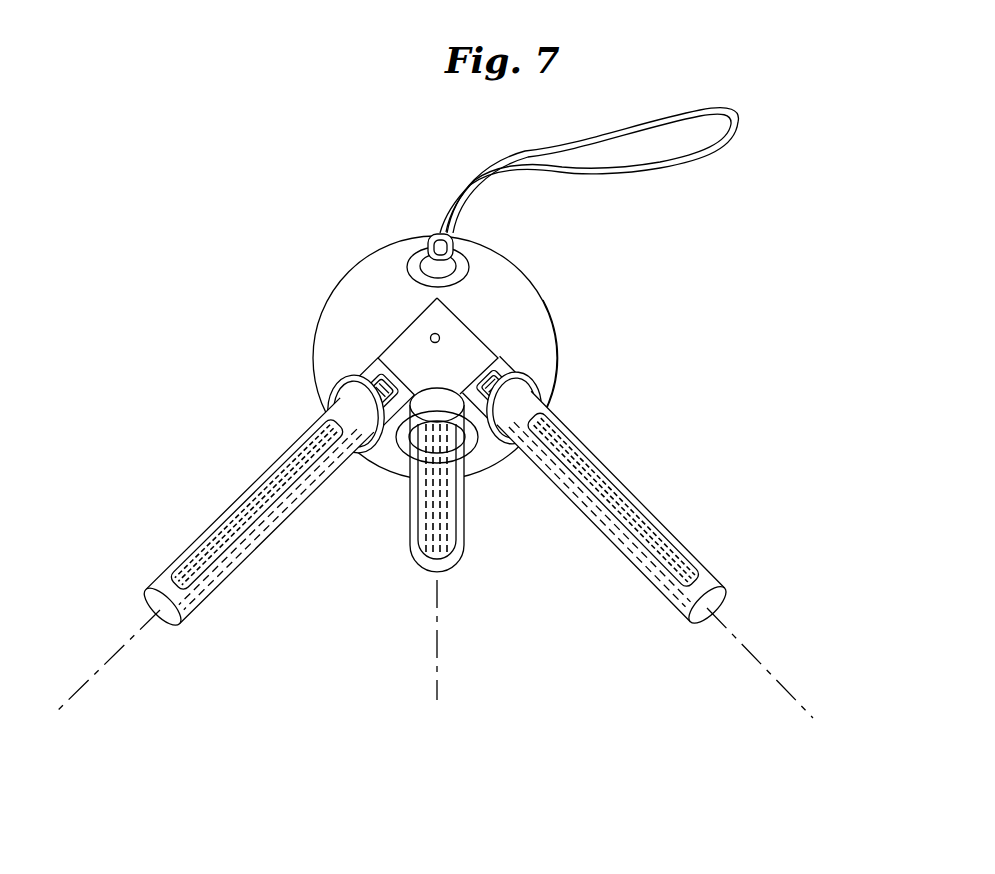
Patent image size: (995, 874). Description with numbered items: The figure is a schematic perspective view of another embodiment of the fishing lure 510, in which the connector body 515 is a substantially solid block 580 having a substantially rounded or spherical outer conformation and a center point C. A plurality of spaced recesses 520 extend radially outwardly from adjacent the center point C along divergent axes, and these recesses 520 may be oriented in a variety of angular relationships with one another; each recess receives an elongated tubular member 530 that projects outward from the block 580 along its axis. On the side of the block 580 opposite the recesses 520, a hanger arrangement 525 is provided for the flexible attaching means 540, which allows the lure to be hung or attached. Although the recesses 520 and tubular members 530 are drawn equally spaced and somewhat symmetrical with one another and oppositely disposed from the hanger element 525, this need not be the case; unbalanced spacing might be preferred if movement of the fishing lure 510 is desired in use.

The fishing lure 510 is at (318, 260).
The connector body 515 is at (532, 278).
The recesses 520 is at (333, 385).
The hanger arrangement 525 is at (413, 252).
The tubular legs 530 is at (237, 492).
The flexible attaching means 540 is at (740, 137).
The solid block 580 is at (555, 343).
The center point C is at (423, 333).